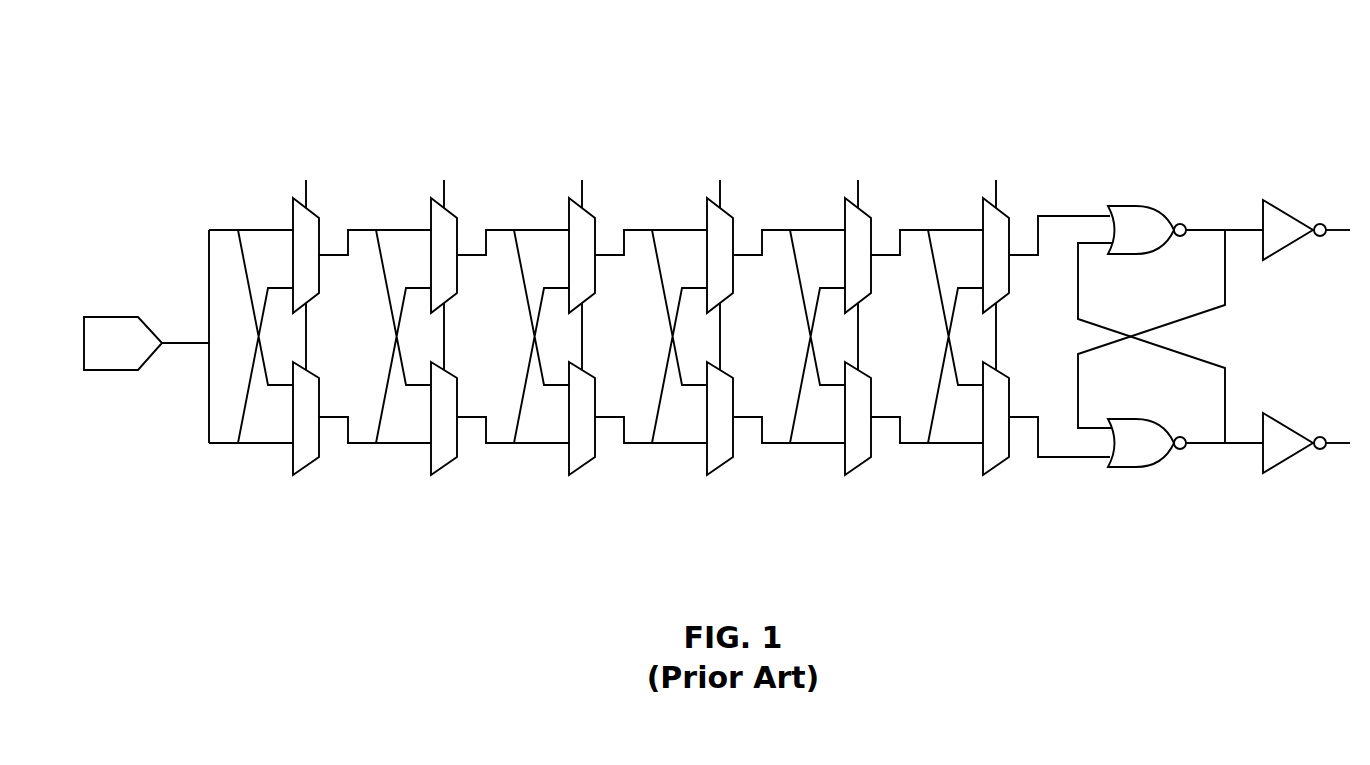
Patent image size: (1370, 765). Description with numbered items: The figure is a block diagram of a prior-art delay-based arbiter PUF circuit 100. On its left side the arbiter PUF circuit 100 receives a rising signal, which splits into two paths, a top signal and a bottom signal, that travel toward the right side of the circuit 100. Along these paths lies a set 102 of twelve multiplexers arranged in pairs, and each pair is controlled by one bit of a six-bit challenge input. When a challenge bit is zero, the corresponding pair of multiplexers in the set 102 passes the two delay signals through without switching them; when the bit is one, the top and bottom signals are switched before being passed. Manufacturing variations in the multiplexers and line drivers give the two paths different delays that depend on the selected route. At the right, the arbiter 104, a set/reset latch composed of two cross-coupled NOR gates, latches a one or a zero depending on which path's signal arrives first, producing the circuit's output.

The arbiter PUF circuit 100 is at (222, 84).
The set of multiplexers 102 is at (243, 493).
The arbiter 104 is at (1038, 493).